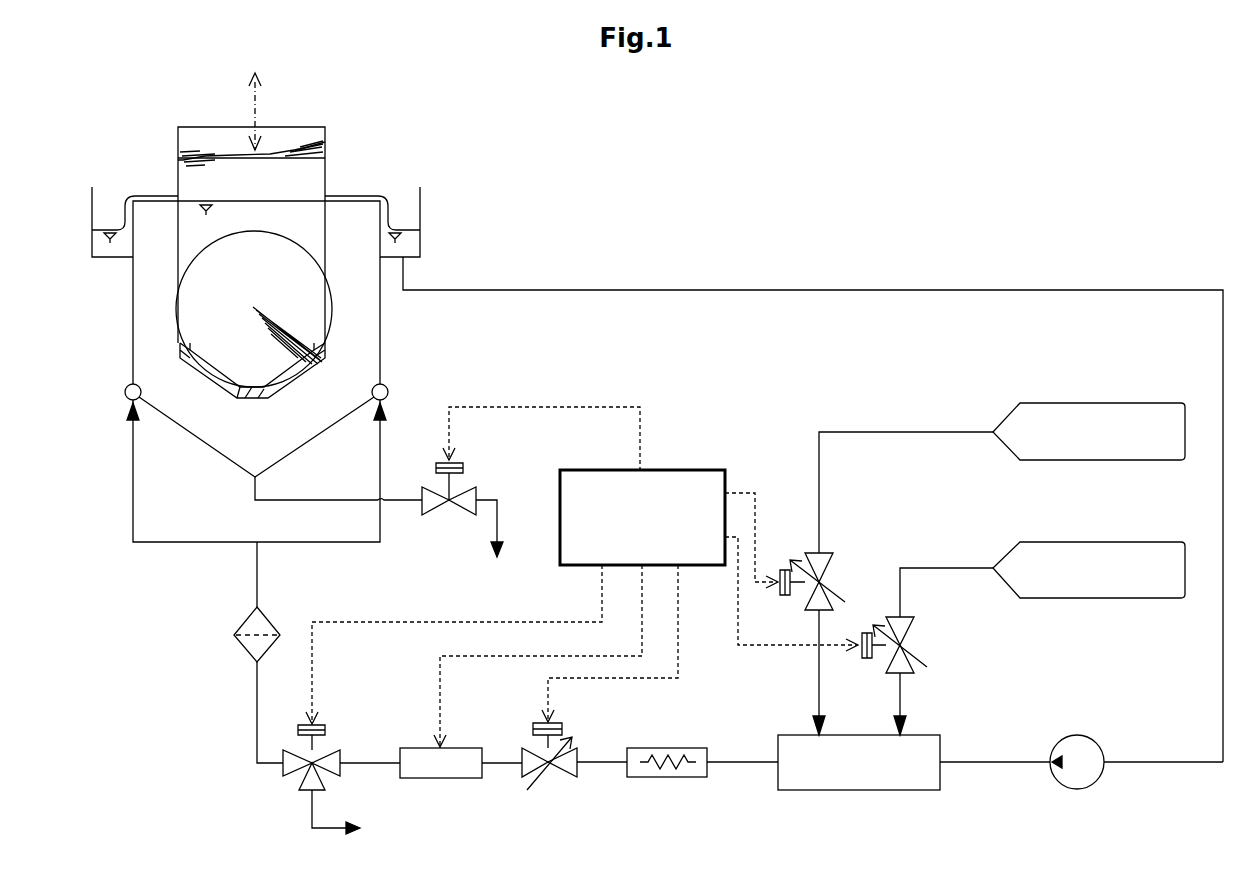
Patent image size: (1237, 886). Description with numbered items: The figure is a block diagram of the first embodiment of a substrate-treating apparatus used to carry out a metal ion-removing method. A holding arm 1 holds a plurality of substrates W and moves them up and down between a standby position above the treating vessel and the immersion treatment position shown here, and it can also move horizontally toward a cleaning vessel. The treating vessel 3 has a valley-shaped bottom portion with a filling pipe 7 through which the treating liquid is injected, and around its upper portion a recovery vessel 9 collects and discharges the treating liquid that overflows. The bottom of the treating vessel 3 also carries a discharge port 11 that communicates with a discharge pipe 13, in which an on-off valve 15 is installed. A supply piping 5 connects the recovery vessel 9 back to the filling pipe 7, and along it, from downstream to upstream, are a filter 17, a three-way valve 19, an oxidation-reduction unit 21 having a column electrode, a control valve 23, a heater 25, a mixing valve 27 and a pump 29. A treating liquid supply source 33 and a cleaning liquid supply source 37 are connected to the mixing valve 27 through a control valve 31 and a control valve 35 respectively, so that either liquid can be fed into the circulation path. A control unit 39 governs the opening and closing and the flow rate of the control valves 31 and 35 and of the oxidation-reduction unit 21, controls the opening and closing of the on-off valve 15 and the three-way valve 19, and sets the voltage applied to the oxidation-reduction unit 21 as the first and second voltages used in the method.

The holding arm 1 is at (315, 137).
The substrates W is at (315, 268).
The treating vessel 3 is at (131, 315).
The recovery vessel 9 is at (420, 215).
The filling pipe 7 is at (127, 387).
The discharge port 11 is at (254, 478).
The discharge pipe 13 is at (302, 501).
The on-off valve 15 is at (452, 505).
The control unit 39 is at (692, 468).
The supply piping 5 is at (256, 584).
The filter 17 is at (235, 644).
The three-way valve 19 is at (327, 728).
The oxidation-reduction unit 21 is at (455, 749).
The control valve 23 is at (575, 749).
The heater 25 is at (655, 748).
The mixing valve 27 is at (873, 792).
The pump 29 is at (1083, 790).
The cleaning liquid supply source 37 is at (1128, 403).
The treating liquid supply source 33 is at (1128, 542).
The control valve 35 is at (826, 555).
The control valve 31 is at (909, 621).